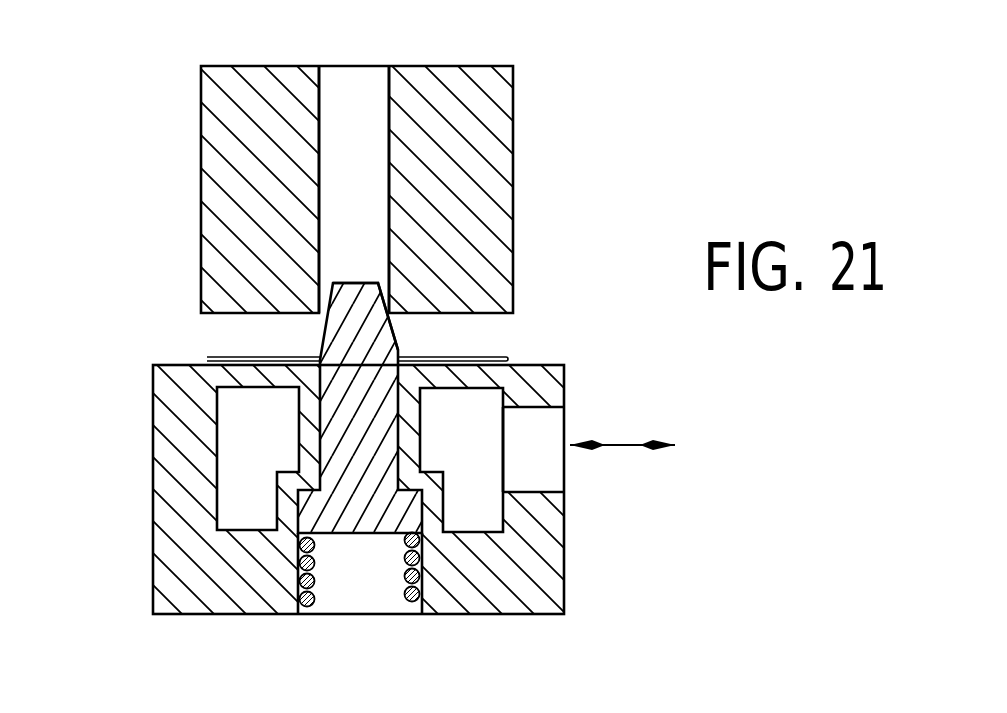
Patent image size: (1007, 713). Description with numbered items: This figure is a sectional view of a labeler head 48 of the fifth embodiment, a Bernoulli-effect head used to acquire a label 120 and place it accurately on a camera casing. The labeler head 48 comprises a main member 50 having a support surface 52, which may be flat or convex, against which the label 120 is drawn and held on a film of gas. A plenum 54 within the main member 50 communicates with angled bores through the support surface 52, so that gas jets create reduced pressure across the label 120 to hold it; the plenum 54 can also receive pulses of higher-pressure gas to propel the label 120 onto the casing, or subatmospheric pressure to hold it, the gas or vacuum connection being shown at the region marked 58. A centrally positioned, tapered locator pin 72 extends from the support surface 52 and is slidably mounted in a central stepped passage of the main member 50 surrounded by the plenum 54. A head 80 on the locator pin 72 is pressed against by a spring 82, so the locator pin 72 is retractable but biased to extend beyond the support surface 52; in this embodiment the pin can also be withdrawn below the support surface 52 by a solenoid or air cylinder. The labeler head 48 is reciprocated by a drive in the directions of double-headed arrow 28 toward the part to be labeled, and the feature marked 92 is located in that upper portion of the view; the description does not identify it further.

The double-headed arrow 28 is at (514, 105).
The slot 92 is at (320, 97).
The labeler head 48 is at (480, 474).
The main member 50 is at (375, 474).
The support surface 52 is at (165, 364).
The plenum 54 is at (270, 449).
The port 58 is at (566, 482).
The locator pin 72 is at (320, 342).
The head 80 is at (385, 525).
The spring 82 is at (313, 586).
The label 120 is at (502, 345).